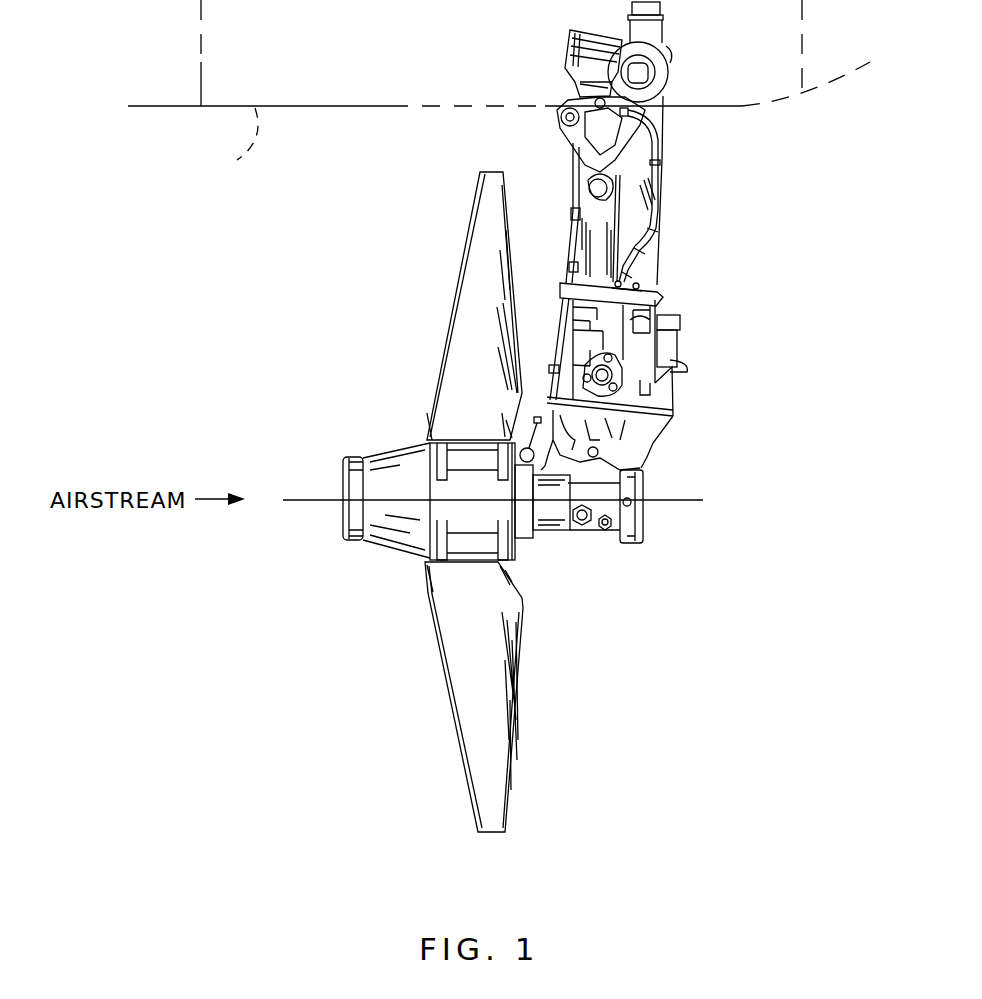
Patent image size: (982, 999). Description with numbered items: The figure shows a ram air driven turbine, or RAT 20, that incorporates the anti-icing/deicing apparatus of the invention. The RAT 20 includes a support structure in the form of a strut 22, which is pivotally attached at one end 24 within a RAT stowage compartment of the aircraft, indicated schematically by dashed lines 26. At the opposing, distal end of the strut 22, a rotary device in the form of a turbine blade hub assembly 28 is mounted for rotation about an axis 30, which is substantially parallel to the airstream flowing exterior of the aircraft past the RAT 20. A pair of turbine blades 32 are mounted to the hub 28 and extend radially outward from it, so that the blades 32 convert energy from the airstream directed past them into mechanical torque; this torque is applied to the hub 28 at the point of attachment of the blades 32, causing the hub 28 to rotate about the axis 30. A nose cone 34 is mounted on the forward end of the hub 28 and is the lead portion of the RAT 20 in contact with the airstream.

The ram air driven turbine (RAT) 20 is at (403, 198).
The strut 22 is at (641, 282).
The end of strut 24 is at (655, 76).
The dashed lines indicating RAT stowage compartment 26 is at (499, 98).
The turbine blade hub assembly 28 is at (396, 560).
The axis 30 is at (305, 497).
The turbine blades 32 is at (457, 278).
The nose cone 34 is at (345, 452).